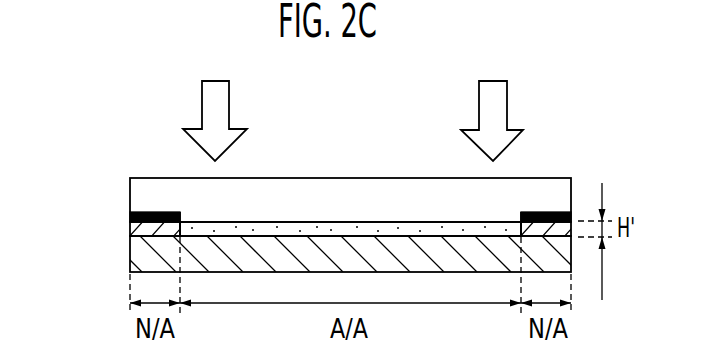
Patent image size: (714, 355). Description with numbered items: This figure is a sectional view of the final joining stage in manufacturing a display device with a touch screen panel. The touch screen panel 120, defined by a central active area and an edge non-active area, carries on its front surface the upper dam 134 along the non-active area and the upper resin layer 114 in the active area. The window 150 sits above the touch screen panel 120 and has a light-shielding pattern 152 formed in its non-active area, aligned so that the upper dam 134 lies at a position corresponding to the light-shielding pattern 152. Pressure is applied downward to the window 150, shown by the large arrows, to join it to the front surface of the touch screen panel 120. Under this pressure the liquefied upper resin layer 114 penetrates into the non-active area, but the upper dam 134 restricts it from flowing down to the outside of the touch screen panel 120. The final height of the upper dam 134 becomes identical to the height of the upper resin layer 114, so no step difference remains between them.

The window 150 is at (136, 186).
The light-shielding pattern 152 is at (136, 213).
The upper dam 134 is at (137, 232).
The upper resin layer 114 is at (292, 233).
The touch screen panel 120 is at (138, 265).